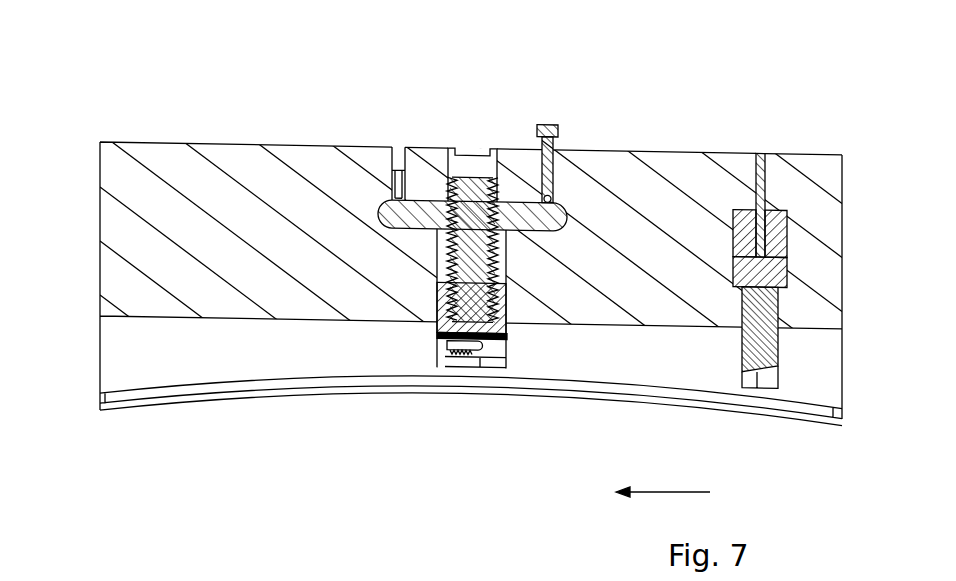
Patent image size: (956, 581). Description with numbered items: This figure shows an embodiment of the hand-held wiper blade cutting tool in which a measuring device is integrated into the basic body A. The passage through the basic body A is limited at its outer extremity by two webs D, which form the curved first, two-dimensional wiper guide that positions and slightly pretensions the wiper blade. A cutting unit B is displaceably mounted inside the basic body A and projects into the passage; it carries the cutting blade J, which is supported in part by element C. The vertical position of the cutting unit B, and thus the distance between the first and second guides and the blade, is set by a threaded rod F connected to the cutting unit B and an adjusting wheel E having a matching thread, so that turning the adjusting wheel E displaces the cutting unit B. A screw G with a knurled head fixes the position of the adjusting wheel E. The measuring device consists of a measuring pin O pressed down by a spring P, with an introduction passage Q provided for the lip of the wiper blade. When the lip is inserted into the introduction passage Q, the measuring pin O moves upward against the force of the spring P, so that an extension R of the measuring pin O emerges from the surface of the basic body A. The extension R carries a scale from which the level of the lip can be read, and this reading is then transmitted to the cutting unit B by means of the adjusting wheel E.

The basic body A is at (226, 258).
The cutting unit B is at (435, 355).
The element C is at (459, 377).
The webs D is at (812, 390).
The adjusting wheel E is at (581, 192).
The threaded rod F is at (432, 235).
The screw G is at (523, 164).
The cutting blade J is at (442, 376).
The measuring pin O is at (788, 253).
The spring P is at (741, 197).
The introduction passage Q is at (763, 391).
The extension R is at (772, 145).